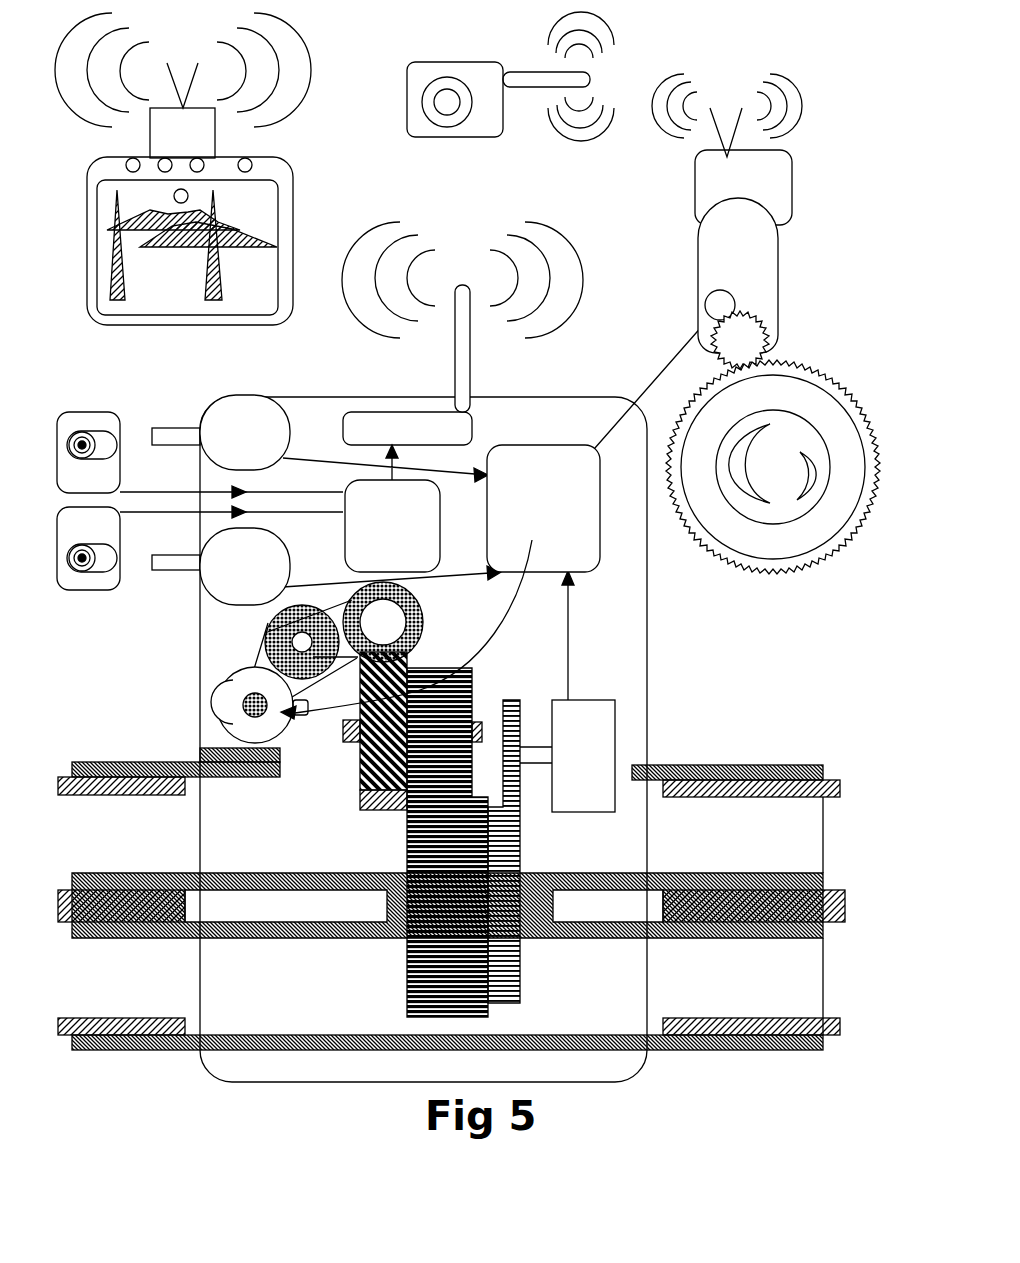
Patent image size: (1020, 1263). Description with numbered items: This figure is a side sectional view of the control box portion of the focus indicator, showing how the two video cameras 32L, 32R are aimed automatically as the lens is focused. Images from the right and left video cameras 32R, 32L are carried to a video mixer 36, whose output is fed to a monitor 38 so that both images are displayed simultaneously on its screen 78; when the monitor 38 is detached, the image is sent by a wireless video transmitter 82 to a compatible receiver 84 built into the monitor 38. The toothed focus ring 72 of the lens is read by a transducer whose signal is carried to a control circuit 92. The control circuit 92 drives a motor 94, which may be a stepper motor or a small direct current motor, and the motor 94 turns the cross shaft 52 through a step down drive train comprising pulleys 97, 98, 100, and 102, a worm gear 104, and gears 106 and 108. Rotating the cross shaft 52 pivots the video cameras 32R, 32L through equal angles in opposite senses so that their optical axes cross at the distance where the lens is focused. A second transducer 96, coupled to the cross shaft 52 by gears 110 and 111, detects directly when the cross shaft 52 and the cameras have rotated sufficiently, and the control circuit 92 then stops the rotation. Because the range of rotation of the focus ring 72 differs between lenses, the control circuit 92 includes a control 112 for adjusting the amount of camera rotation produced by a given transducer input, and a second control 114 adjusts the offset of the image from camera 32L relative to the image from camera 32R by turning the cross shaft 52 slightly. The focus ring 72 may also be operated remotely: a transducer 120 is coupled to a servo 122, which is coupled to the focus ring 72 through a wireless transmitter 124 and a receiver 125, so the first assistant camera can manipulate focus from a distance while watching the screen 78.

The left video camera 32L is at (105, 452).
The right video camera 32R is at (103, 558).
The video mixer 36 is at (390, 493).
The monitor 38 is at (282, 210).
The cross shaft 52 is at (138, 903).
The focus ring 72 is at (800, 368).
The screen 78 is at (270, 256).
The wireless video transmitter 82 is at (367, 420).
The receiver 84 is at (178, 122).
The control circuit 92 is at (537, 467).
The motor 94 is at (230, 717).
The second transducer 96 is at (603, 755).
The pulley 97 is at (230, 682).
The pulley 98 is at (263, 642).
The pulley 100 is at (263, 620).
The pulley 102 is at (410, 597).
The worm gear 104 is at (410, 615).
The gear 106 is at (360, 790).
The gear 108 is at (410, 817).
The gear 110 is at (683, 793).
The gear 111 is at (520, 723).
The control 112 is at (220, 443).
The second control 114 is at (218, 557).
The transducer 120 is at (733, 300).
The servo 122 is at (768, 322).
The wireless transmitter 124 is at (475, 128).
The receiver 125 is at (747, 185).